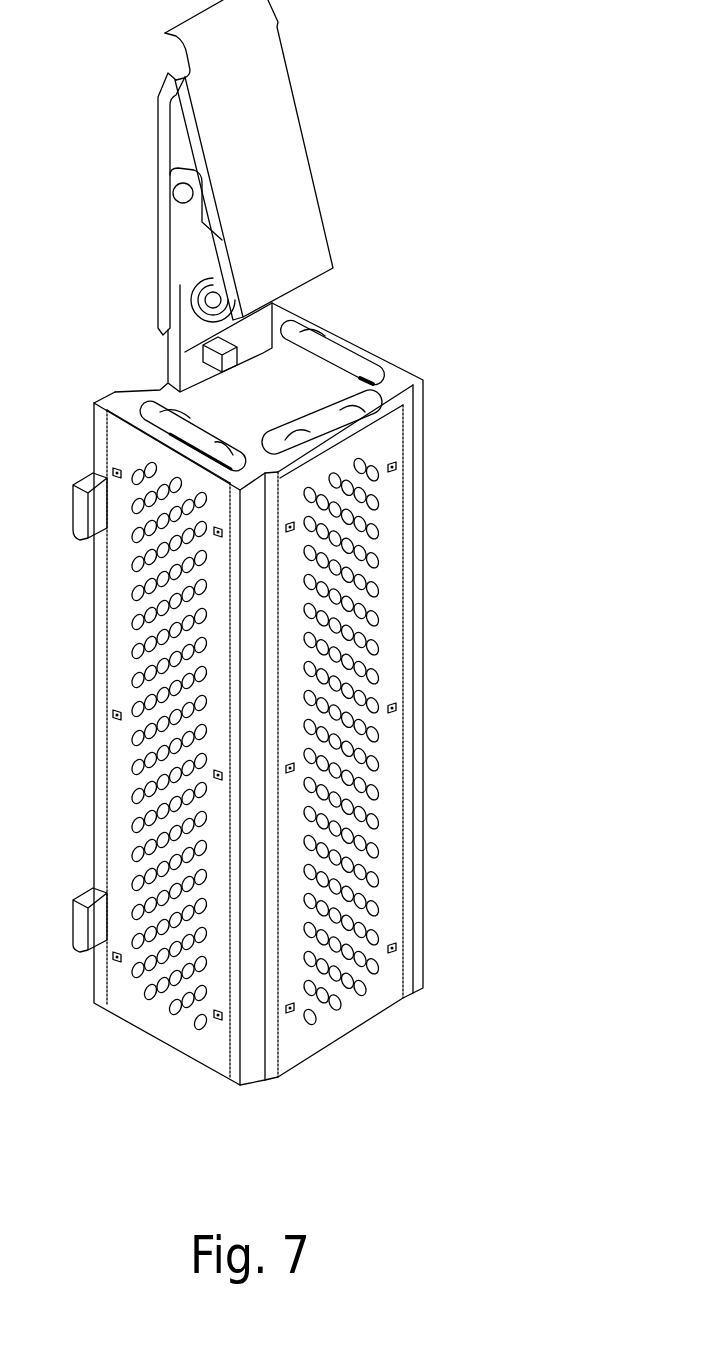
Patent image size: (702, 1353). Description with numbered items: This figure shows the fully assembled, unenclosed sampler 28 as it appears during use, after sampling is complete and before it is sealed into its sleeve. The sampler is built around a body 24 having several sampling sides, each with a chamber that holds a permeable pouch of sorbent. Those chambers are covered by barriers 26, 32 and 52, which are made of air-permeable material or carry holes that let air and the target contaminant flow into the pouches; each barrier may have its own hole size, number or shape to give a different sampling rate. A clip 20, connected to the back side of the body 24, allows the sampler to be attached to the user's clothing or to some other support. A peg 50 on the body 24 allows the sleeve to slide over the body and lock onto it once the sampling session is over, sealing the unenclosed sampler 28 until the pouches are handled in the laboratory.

The clip 20 is at (284, 101).
The body 24 is at (425, 407).
The barrier 26 is at (163, 1033).
The unenclosed sampler 28 is at (521, 234).
The barrier 32 is at (340, 1027).
The peg 50 is at (91, 481).
The barrier 52 is at (401, 362).